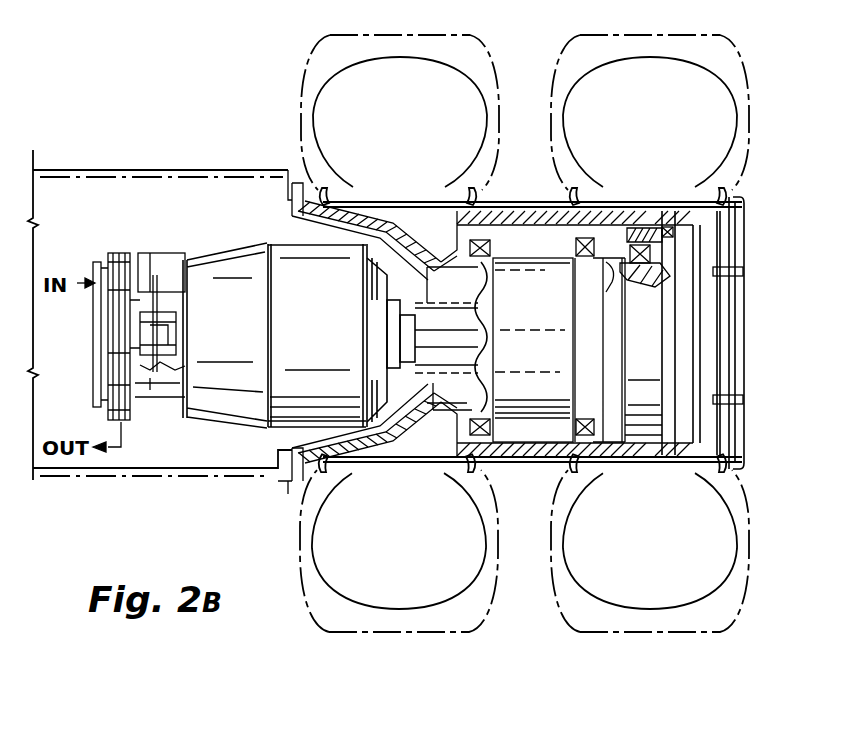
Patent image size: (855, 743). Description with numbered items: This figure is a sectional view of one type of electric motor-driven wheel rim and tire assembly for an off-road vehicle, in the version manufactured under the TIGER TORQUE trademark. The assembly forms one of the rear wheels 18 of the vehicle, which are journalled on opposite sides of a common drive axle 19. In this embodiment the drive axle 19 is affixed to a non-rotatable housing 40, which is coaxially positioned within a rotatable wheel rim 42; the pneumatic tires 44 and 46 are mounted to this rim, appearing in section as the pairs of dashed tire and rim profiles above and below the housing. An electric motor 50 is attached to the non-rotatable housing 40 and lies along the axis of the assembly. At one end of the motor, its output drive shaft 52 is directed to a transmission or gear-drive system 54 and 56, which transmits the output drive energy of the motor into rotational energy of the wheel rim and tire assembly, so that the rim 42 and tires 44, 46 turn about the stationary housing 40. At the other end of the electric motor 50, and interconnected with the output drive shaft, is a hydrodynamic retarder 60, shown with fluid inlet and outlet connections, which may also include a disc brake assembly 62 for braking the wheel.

The rear wheel 18 is at (273, 95).
The drive axle 19 is at (93, 168).
The non-rotatable housing 40 is at (298, 183).
The rotatable wheel rim 42 is at (523, 465).
The pneumatic tire 44 is at (297, 523).
The pneumatic tire 46 is at (556, 578).
The electric motor 50 is at (326, 336).
The output drive shaft 52 is at (430, 298).
The gear-drive system 54 is at (541, 336).
The gear-drive system 56 is at (651, 336).
The hydrodynamic retarder 60 is at (118, 256).
The disc brake assembly 62 is at (162, 270).